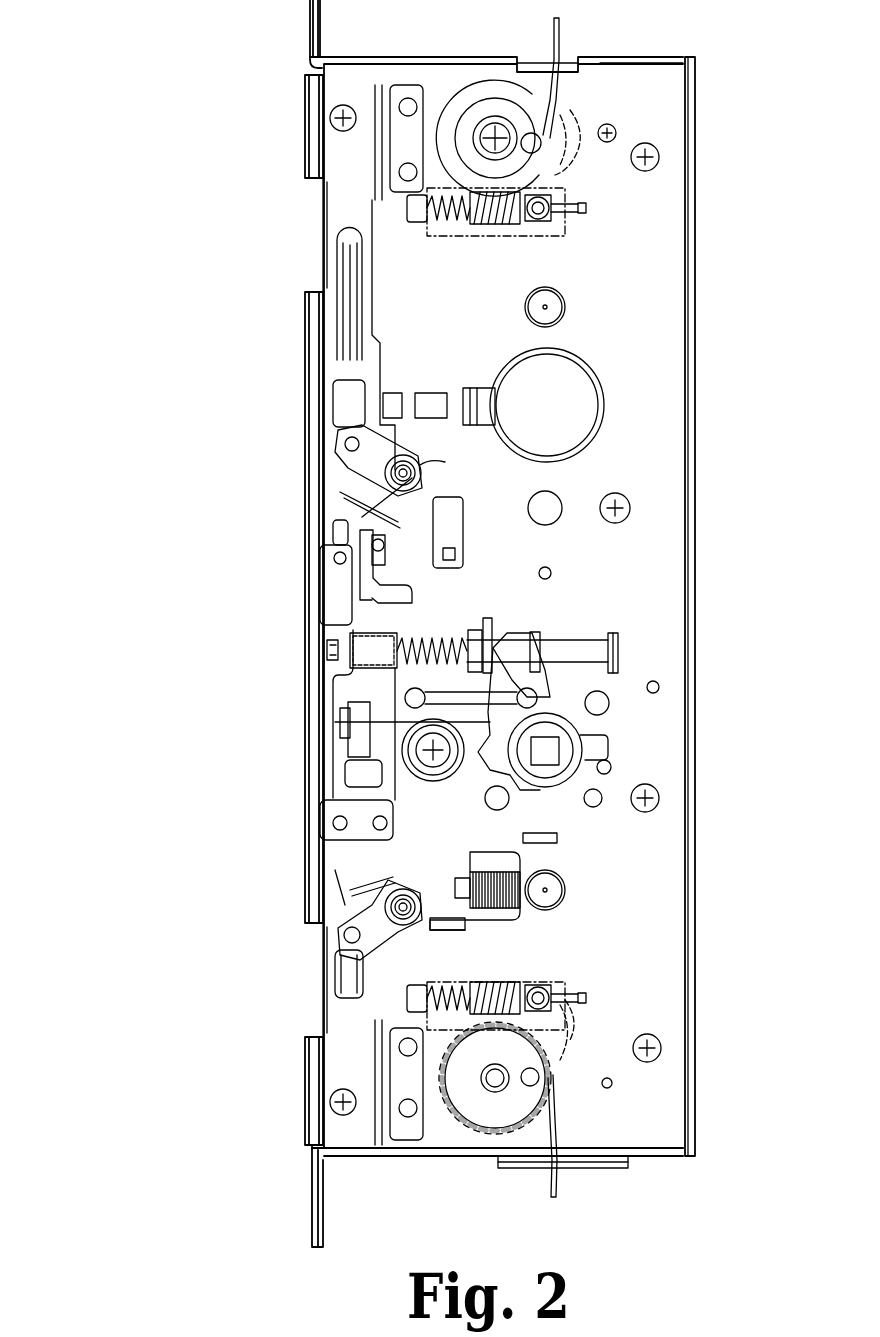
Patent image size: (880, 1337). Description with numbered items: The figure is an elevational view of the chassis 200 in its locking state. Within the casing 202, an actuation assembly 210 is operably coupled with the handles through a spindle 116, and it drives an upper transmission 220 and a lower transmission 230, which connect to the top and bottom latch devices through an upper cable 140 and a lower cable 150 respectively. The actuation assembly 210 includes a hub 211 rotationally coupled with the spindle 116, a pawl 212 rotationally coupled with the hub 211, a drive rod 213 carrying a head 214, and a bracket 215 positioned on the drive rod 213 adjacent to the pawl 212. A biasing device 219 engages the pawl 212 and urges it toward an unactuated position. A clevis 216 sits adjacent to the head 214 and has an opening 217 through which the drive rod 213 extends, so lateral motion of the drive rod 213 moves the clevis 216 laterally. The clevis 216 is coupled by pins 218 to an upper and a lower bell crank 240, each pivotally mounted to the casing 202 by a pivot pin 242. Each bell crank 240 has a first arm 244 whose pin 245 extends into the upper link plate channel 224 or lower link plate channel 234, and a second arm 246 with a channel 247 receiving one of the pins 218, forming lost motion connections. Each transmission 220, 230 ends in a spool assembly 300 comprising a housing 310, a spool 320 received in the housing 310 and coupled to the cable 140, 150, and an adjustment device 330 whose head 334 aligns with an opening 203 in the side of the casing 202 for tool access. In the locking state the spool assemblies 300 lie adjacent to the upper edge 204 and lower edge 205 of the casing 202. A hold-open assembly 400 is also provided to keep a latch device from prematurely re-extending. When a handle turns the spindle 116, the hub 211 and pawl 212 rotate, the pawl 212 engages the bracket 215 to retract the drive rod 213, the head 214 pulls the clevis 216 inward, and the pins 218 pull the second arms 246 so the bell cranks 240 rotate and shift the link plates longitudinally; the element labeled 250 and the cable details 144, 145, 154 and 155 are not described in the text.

The chassis 200 is at (185, 88).
The casing 202 is at (695, 97).
The upper edge 204 is at (675, 40).
The lower edge 205 is at (675, 1185).
The upper transmission 220 is at (265, 238).
The lower transmission 230 is at (245, 993).
The opening 203 is at (311, 270).
The lower link plate channel 234 is at (350, 995).
The upper link plate channel 224 is at (345, 400).
The first arm 244 is at (345, 440).
The pivot pin 242 is at (412, 478).
The pin 245 is at (372, 470).
The second arm 246 is at (325, 515).
The channel 247 is at (335, 538).
The pins 218 is at (340, 560).
The head 214 is at (412, 597).
The bell crank 240 is at (445, 462).
The hold-open assembly 400 is at (455, 582).
The actuation assembly 210 is at (225, 655).
The biasing device 219 is at (458, 645).
The bracket 215 is at (540, 638).
The drive rod 213 is at (590, 640).
The pawl 212 is at (535, 672).
The hub 211 is at (598, 740).
The spindle 116 is at (545, 766).
The opening 217 is at (343, 712).
The clevis 216 is at (322, 748).
The solenoid 250 is at (468, 800).
The spool 320 is at (462, 100).
The pin 145 is at (535, 148).
The pin 155 is at (532, 1082).
The upper cable 140 is at (560, 38).
The strip end 144 is at (540, 57).
The lower cable 150 is at (560, 1190).
The strip tab 154 is at (540, 1148).
The adjustment device 330 is at (455, 250).
The head 334 is at (413, 225).
The spool assembly 300 is at (590, 125).
The housing 310 is at (578, 148).